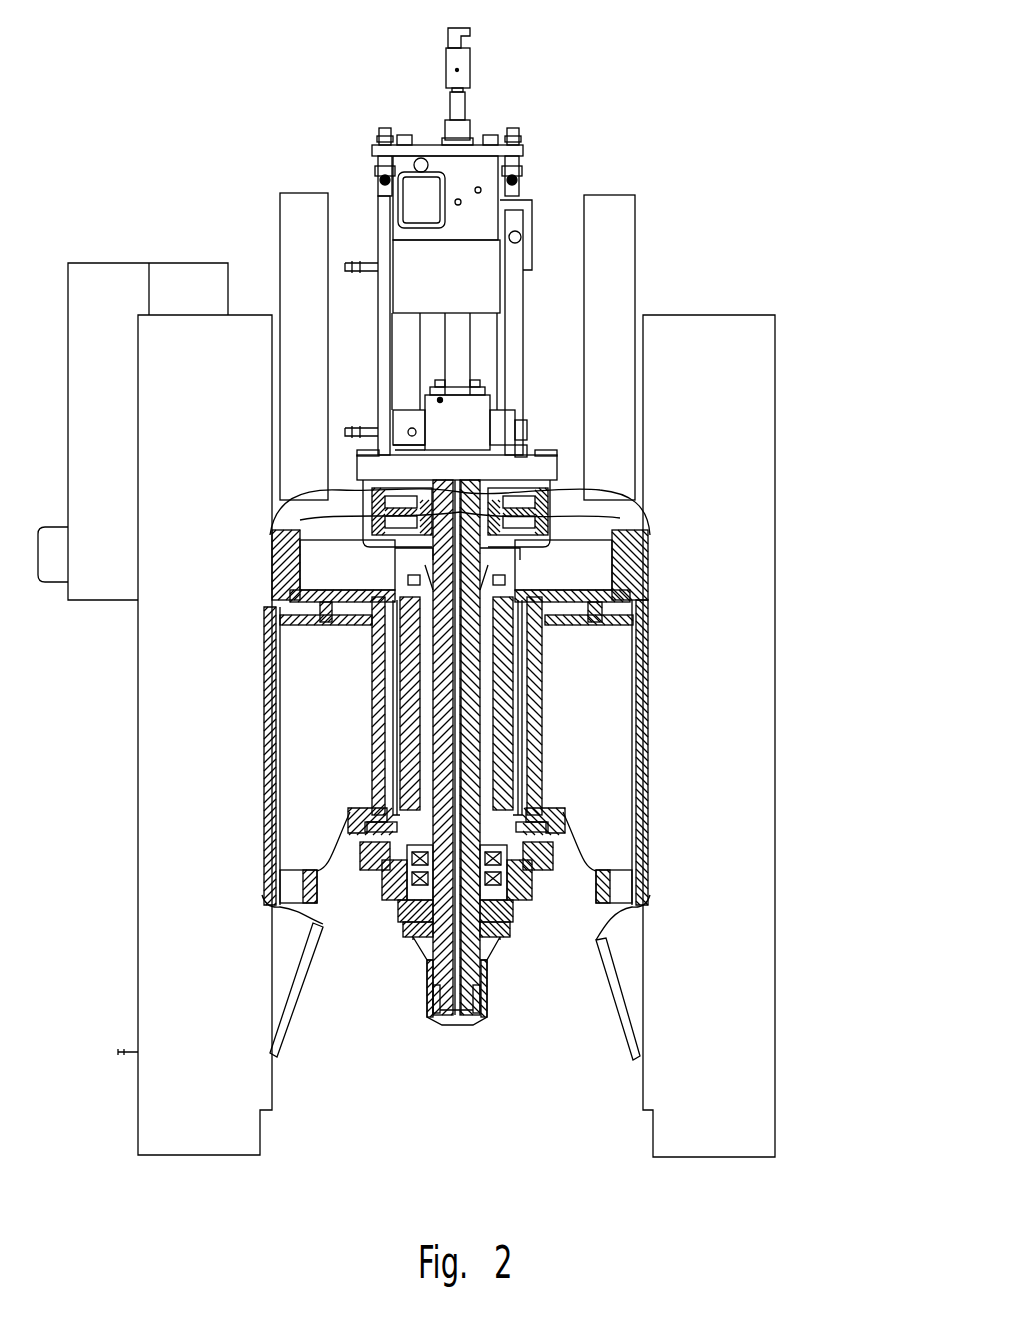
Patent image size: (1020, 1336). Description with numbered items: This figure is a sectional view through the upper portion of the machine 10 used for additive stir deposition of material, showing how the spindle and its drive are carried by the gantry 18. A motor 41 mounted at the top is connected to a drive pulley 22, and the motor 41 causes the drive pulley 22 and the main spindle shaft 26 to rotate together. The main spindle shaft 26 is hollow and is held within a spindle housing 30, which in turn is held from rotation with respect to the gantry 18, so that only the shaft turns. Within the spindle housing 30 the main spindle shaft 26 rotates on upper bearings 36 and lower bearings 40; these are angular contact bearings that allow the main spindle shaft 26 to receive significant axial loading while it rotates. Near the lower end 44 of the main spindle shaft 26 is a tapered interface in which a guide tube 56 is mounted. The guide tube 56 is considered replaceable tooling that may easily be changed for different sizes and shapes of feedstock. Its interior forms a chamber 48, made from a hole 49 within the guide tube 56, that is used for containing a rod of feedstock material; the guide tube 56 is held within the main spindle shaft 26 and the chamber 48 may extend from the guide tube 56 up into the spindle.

The machine 10 is at (706, 108).
The gantry 18 is at (353, 563).
The drive pulley 22 is at (519, 506).
The main spindle shaft 26 is at (467, 681).
The spindle housing 30 is at (517, 773).
The upper bearings 36 is at (553, 612).
The lower bearings 40 is at (495, 890).
The motor 41 is at (402, 263).
The lower end 44 is at (503, 927).
The chamber 48 is at (470, 1012).
The hole 49 is at (490, 1012).
The guide tube 56 is at (428, 928).